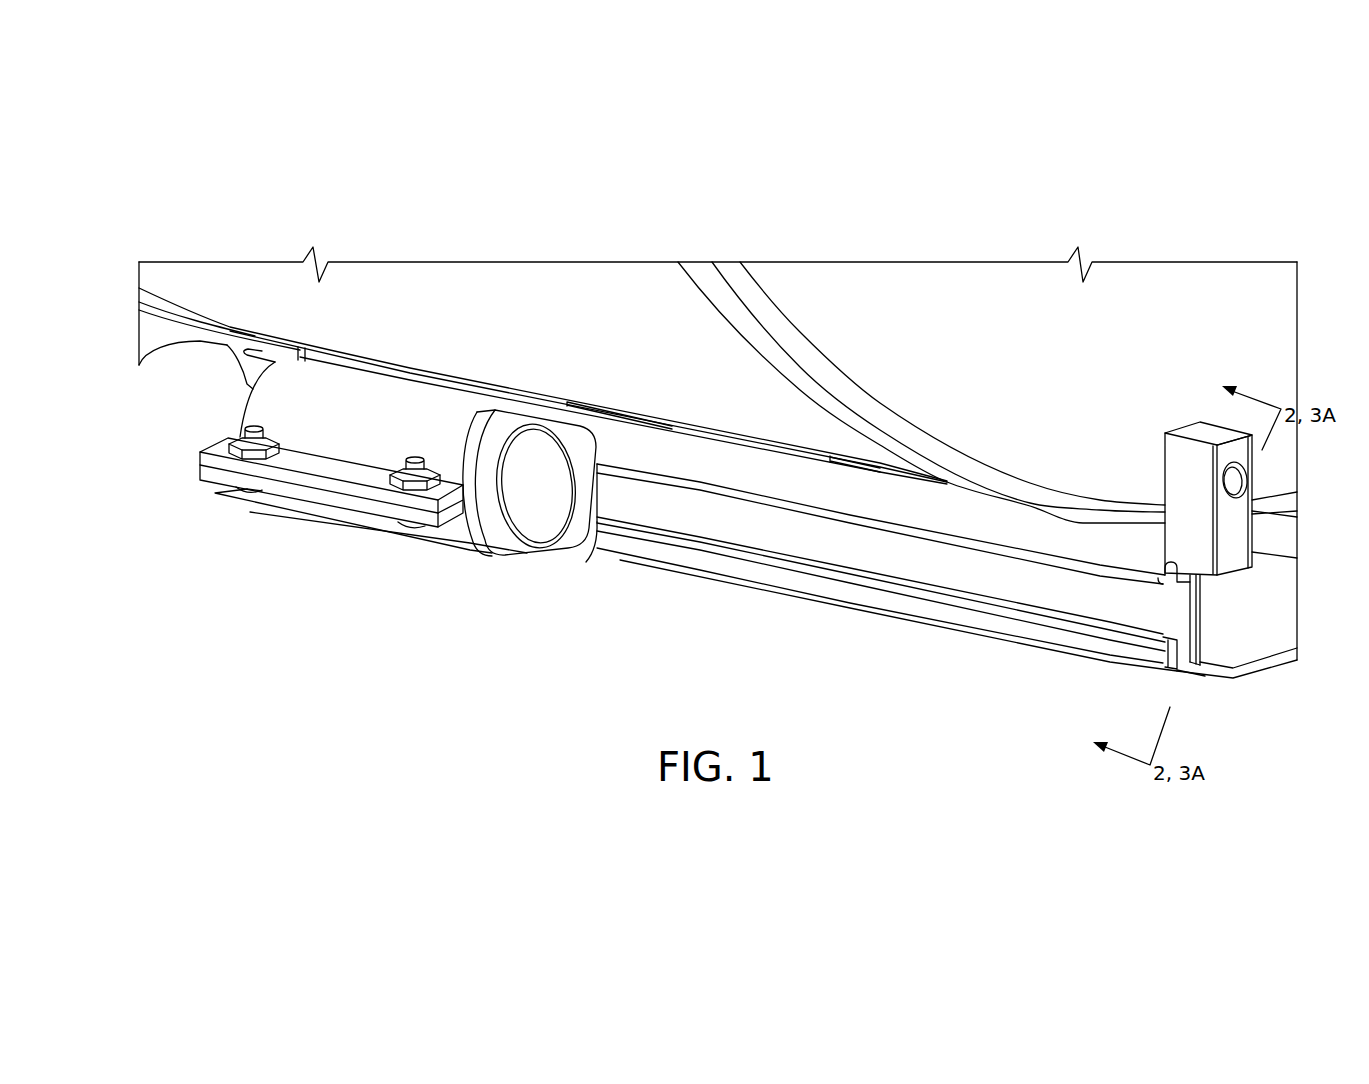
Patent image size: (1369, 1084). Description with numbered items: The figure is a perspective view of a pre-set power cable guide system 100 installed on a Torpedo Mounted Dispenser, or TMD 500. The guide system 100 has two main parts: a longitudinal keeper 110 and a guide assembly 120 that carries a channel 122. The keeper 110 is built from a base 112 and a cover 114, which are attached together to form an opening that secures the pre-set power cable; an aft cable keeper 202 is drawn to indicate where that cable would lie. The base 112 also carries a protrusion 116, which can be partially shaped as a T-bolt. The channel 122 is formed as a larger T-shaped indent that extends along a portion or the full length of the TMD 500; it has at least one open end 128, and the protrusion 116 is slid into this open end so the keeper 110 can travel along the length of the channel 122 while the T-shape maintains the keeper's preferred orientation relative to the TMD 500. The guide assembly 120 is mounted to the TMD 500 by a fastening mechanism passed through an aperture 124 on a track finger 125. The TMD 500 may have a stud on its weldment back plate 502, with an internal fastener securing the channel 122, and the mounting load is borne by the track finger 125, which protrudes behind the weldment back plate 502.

The guide system 100 is at (190, 530).
The longitudinal keeper 110 is at (403, 543).
The base 112 is at (263, 512).
The cover 114 is at (200, 455).
The protrusion 116 is at (597, 524).
The guide assembly 120 is at (860, 495).
The channel 122 is at (1083, 601).
The aperture 124 is at (1223, 486).
The track finger 125 is at (1166, 443).
The open end 128 is at (1183, 653).
The aft cable keeper 202 is at (530, 565).
The Torpedo Mounted Dispenser (TMD) 500 is at (634, 262).
The weldment back plate 502 is at (1068, 380).